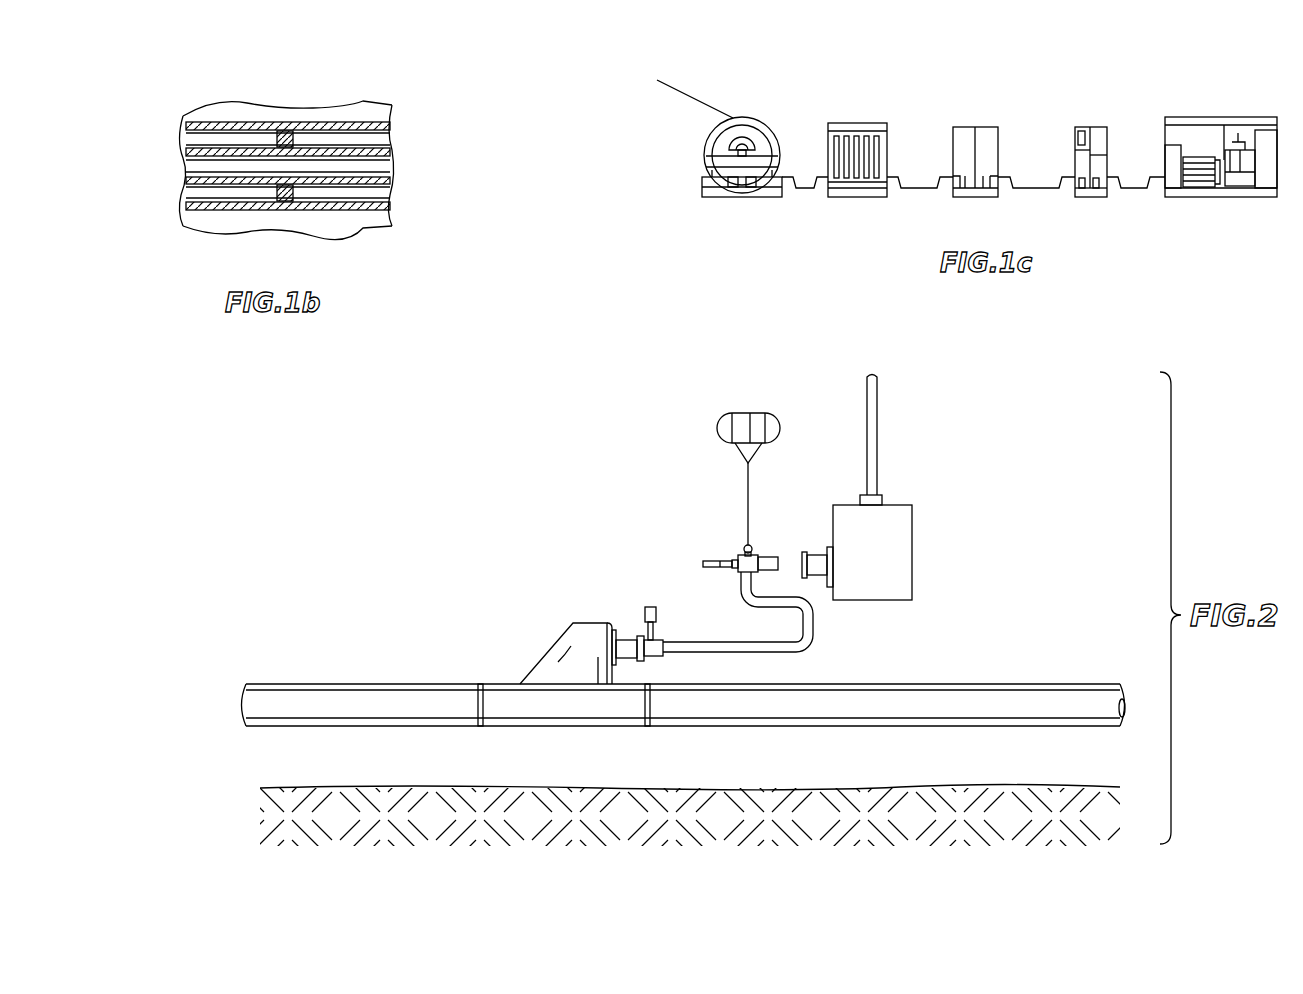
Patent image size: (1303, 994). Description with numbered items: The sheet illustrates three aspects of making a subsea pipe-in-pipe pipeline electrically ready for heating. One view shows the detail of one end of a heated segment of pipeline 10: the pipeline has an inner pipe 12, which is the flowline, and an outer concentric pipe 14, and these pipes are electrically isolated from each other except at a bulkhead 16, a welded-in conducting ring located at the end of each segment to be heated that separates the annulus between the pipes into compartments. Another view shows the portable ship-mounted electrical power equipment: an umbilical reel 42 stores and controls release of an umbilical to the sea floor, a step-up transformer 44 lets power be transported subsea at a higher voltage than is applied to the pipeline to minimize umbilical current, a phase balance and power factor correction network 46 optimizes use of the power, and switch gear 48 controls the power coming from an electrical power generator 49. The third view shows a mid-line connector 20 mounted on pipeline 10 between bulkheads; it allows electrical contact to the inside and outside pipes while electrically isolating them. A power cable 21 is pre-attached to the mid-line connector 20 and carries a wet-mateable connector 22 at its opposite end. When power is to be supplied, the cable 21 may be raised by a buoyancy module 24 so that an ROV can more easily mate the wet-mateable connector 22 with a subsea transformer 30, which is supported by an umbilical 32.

In FIG. 2, the pipeline 10 is at (396, 700).
In FIG. 1B, the inner pipe 12 is at (184, 157).
In FIG. 1B, the outer concentric pipe 14 is at (186, 128).
In FIG. 1B, the bulkhead 16 is at (292, 206).
In FIG. 2, the mid-line connector 20 is at (563, 660).
In FIG. 2, the cable 21 is at (800, 633).
In FIG. 2, the wet-mateable connector 22 is at (815, 552).
In FIG. 2, the buoyancy module 24 is at (752, 413).
In FIG. 2, the subsea transformer 30 is at (905, 548).
In FIG. 2, the umbilical 32 is at (877, 420).
In FIG. 1C, the umbilical reel 42 is at (740, 118).
In FIG. 1C, the step-up transformer 44 is at (840, 123).
In FIG. 1C, the phase balance and power factor correction network 46 is at (962, 127).
In FIG. 1C, the switch gear 48 is at (1086, 127).
In FIG. 1C, the electrical power generator 49 is at (1227, 117).